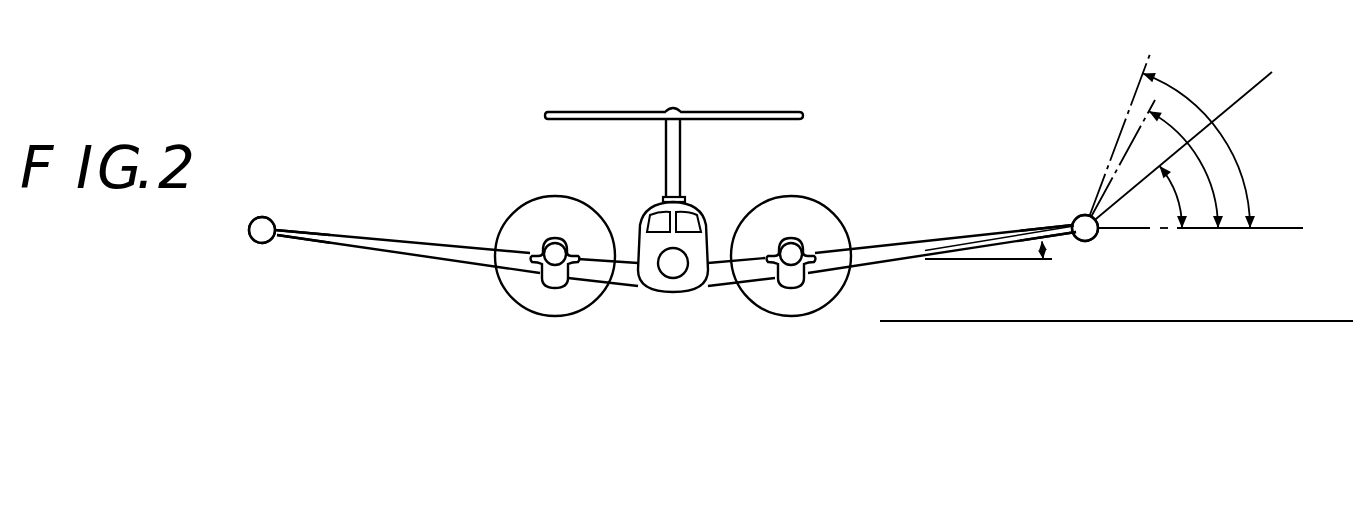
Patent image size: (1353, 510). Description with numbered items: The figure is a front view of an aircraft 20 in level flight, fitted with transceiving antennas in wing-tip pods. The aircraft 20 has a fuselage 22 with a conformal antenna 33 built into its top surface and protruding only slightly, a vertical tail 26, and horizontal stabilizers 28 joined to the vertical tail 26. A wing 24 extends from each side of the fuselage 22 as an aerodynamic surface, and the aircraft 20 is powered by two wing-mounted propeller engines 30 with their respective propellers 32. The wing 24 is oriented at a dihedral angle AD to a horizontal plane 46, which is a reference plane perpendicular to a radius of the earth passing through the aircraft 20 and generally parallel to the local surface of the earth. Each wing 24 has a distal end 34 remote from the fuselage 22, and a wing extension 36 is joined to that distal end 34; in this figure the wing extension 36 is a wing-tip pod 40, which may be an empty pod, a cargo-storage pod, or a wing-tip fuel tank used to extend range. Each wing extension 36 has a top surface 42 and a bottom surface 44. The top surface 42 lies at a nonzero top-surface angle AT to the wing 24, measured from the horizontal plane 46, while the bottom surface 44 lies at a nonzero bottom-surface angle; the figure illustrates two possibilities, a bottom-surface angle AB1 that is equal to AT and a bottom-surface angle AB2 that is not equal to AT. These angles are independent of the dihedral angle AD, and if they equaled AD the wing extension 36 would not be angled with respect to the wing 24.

The aircraft 20 is at (408, 93).
The fuselage 22 is at (643, 208).
The wing 24 is at (886, 262).
The vertical tail 26 is at (683, 145).
The horizontal stabilizers 28 is at (598, 112).
The propeller engines 30 is at (567, 228).
The propellers 32 is at (522, 302).
The conformal antenna 33 is at (683, 199).
The distal end 34 is at (273, 242).
The wing extension 36 is at (266, 200).
The wing-tip pod 40 is at (238, 232).
The top surface 42 is at (1079, 215).
The bottom surface 44 is at (256, 243).
The horizontal plane 46 is at (1173, 320).
The top-surface angle AT is at (1229, 142).
The bottom-surface angle AB1 is at (1216, 183).
The bottom-surface angle AB2 is at (1186, 206).
The dihedral angle AD is at (1050, 247).